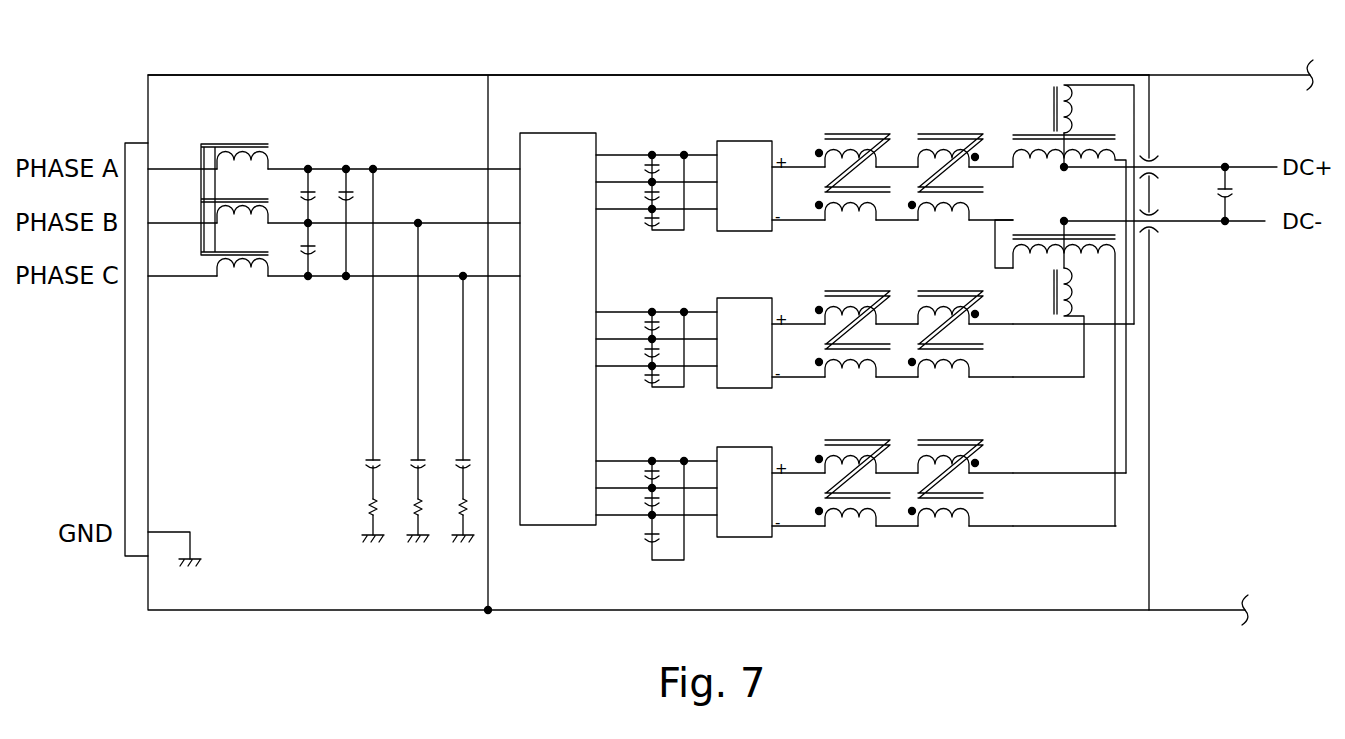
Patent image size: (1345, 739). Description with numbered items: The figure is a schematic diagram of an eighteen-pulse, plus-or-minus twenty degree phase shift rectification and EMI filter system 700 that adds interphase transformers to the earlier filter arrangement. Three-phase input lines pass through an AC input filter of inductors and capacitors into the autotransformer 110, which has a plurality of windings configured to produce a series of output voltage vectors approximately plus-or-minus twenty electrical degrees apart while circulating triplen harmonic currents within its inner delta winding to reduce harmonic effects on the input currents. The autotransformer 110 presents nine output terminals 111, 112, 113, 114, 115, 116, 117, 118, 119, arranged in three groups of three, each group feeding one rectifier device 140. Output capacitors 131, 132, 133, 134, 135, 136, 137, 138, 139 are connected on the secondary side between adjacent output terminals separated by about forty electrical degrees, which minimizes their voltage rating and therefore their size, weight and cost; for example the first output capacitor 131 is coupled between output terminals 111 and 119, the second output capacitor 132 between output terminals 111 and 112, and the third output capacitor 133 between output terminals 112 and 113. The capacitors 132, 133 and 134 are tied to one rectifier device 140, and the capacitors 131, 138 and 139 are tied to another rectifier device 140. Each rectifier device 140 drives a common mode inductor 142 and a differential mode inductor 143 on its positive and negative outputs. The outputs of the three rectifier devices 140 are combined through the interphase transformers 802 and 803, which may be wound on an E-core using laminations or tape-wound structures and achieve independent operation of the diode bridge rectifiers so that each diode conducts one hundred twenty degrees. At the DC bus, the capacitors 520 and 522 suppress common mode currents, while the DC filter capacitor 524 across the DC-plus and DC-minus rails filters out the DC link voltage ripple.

The rectification and EMI filter system 700 is at (105, 98).
The autotransformer 110 is at (579, 263).
The output terminal 111 is at (633, 155).
The output terminal 112 is at (633, 182).
The output terminal 113 is at (633, 209).
The output terminal 114 is at (633, 312).
The output terminal 115 is at (633, 339).
The output terminal 116 is at (633, 366).
The output terminal 117 is at (633, 461).
The output terminal 118 is at (633, 488).
The output terminal 119 is at (633, 515).
The first output capacitor 131 is at (630, 537).
The second output capacitor 132 is at (630, 166).
The third output capacitor 133 is at (630, 194).
The output capacitor 134 is at (630, 221).
The output capacitor 135 is at (630, 323).
The output capacitor 136 is at (630, 350).
The output capacitor 137 is at (630, 377).
The output capacitor 138 is at (630, 475).
The output capacitor 139 is at (630, 502).
The rectifier device 140 is at (752, 141).
The common mode inductor 142 is at (855, 232).
The differential mode inductor 143 is at (945, 226).
The interphase transformer 802 is at (1048, 118).
The interphase transformer 803 is at (1048, 296).
The capacitor 520 is at (1156, 161).
The capacitor 522 is at (1157, 229).
The DC filter capacitor 524 is at (1238, 188).